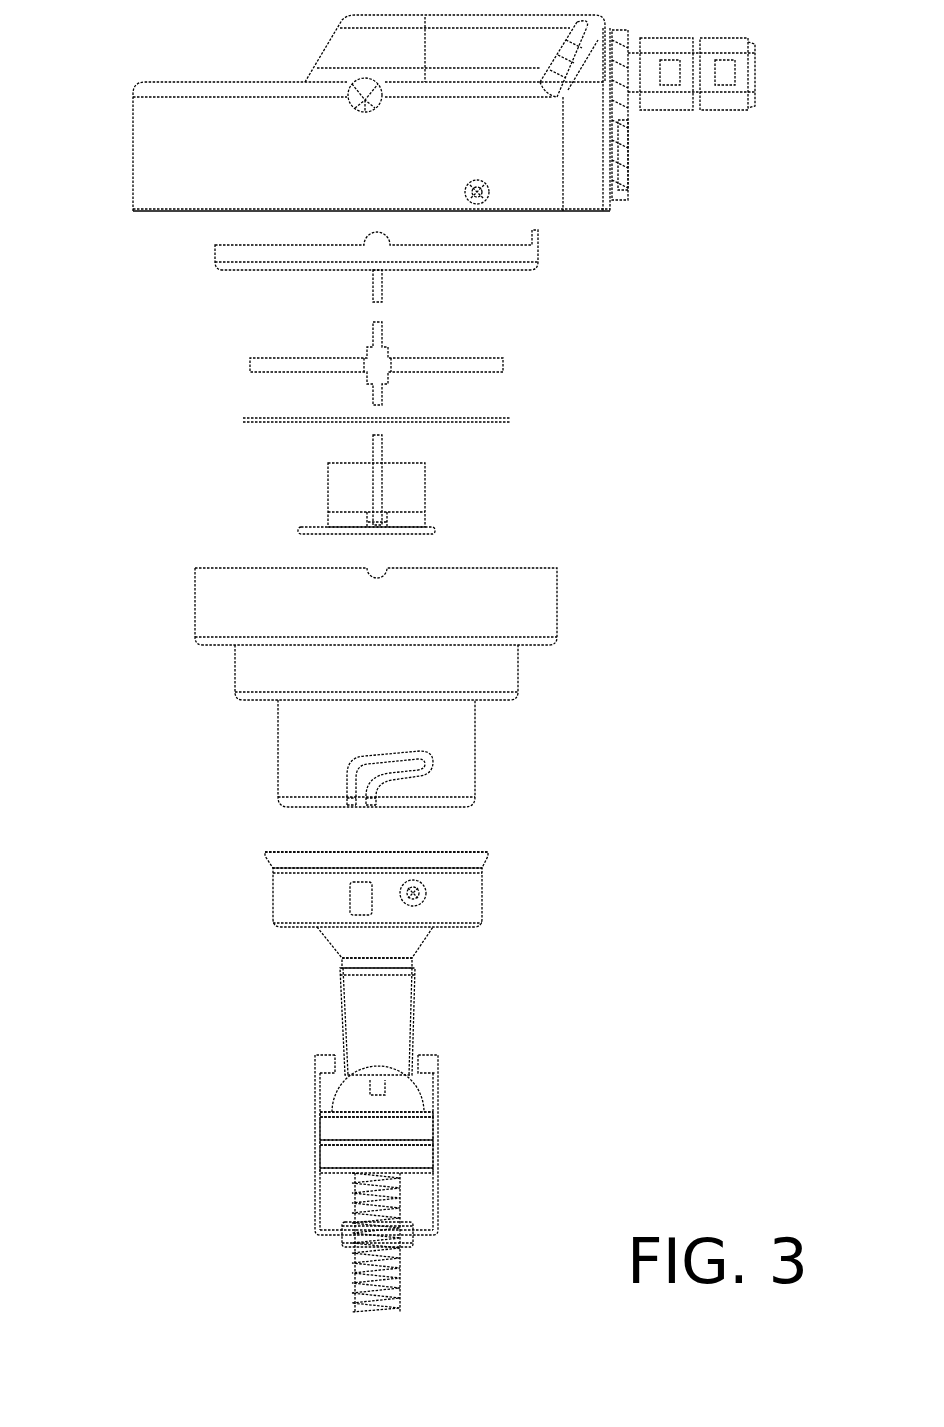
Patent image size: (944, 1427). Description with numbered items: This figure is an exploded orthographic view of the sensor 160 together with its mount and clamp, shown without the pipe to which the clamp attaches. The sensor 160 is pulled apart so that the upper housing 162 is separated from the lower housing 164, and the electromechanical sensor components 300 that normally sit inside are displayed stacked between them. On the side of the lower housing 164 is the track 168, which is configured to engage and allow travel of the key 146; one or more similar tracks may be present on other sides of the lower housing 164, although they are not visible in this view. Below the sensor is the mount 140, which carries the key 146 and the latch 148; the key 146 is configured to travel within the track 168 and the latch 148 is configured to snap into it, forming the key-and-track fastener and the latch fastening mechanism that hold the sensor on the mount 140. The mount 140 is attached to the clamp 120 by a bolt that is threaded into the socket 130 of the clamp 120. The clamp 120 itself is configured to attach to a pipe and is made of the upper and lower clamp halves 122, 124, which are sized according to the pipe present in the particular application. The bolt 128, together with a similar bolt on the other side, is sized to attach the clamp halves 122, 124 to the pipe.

The clamp 120 is at (525, 1155).
The upper clamp half 122 is at (317, 1128).
The lower clamp half 124 is at (315, 1157).
The bolt 128 is at (353, 1267).
The socket 130 is at (415, 1010).
The mount 140 is at (572, 945).
The key 146 is at (425, 892).
The latch 148 is at (353, 897).
The sensor 160 is at (727, 392).
The upper housing 162 is at (152, 212).
The lower housing 164 is at (238, 697).
The track 168 is at (430, 763).
The electromechanical sensor components 300 is at (547, 230).